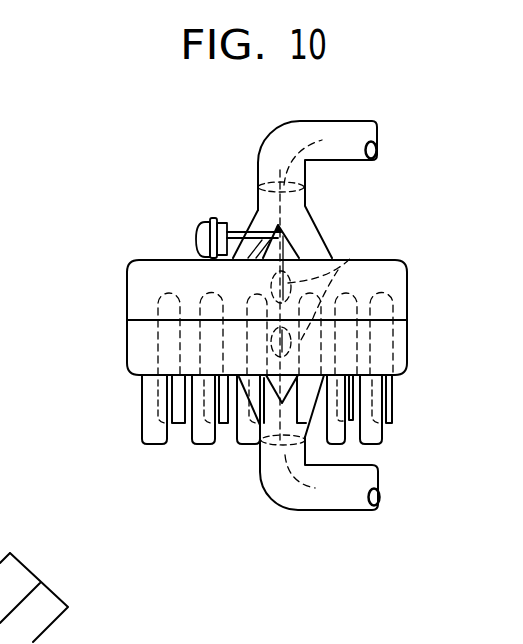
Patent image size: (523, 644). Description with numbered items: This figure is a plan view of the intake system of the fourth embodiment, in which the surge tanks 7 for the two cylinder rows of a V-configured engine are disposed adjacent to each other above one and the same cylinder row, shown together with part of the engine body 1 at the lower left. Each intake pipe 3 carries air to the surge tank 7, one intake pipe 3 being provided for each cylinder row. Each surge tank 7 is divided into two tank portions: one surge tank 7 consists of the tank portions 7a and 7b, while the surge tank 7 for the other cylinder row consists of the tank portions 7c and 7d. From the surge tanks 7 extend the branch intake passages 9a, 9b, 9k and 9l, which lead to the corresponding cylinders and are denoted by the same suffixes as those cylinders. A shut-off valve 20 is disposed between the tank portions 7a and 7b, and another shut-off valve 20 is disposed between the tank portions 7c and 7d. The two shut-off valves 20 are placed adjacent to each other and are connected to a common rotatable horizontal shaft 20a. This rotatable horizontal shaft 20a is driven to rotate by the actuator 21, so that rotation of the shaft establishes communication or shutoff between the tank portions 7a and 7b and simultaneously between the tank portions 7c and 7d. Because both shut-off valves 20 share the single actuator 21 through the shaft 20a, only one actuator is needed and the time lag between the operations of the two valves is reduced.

The plug body 1 is at (45, 583).
The intake pipe 3 is at (332, 130).
The surge tank 7 is at (149, 252).
The tank portion 7a is at (127, 298).
The tank portion 7b is at (400, 272).
The tank portion 7c is at (130, 355).
The tank portion 7d is at (400, 340).
The branch intake passage 9a is at (175, 428).
The branch intake passage 9b is at (143, 438).
The branch intake passage 9k is at (393, 388).
The branch intake passage 9l is at (385, 440).
The shut-off valve 20 is at (338, 270).
The rotatable horizontal shaft 20a is at (291, 258).
The actuator 21 is at (200, 221).